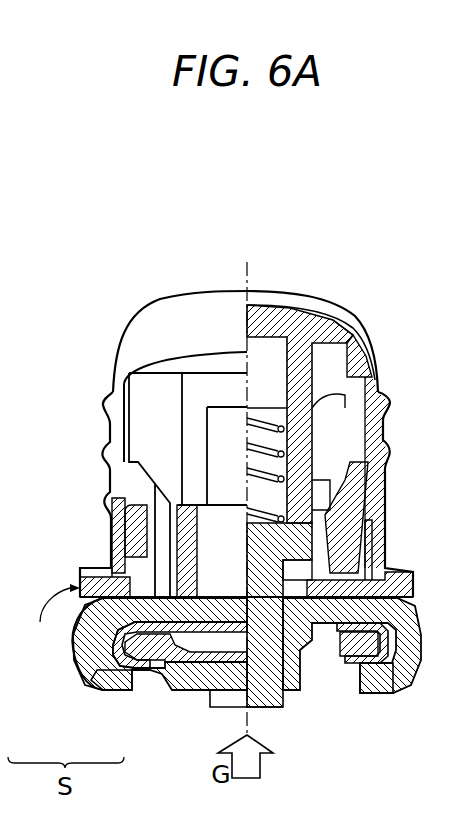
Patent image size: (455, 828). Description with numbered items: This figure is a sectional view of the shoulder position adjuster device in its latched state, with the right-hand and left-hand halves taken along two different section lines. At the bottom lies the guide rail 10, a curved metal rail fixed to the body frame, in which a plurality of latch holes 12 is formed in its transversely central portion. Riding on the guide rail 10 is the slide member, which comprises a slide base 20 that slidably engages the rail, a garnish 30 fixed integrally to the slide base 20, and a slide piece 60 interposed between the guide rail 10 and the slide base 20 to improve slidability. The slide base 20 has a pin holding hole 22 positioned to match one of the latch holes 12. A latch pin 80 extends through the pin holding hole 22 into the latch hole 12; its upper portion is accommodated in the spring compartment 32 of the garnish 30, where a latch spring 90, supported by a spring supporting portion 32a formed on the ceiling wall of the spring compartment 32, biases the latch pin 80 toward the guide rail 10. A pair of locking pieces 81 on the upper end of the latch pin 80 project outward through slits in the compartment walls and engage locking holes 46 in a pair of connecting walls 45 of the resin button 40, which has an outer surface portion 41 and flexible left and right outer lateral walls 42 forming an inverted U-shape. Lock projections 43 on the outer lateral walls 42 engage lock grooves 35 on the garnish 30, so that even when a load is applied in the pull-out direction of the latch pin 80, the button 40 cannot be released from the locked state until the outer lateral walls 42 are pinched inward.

The guide rail 10 is at (160, 678).
The latch hole 12 is at (287, 693).
The slide base 20 is at (95, 668).
The pin holding hole 22 is at (305, 693).
The garnish 30 is at (50, 650).
The spring compartment 32 is at (345, 408).
The spring supporting portion 32a is at (250, 440).
The lock groove 35 is at (140, 576).
The button 40 is at (327, 302).
The outer surface portion 41 is at (268, 299).
The outer lateral wall 42 is at (390, 401).
The lock projection 43 is at (120, 573).
The connecting wall 45 is at (300, 358).
The locking hole 46 is at (318, 517).
The slide piece 60 is at (114, 688).
The latch pin 80 is at (268, 697).
The locking piece 81 is at (293, 547).
The latch spring 90 is at (285, 450).